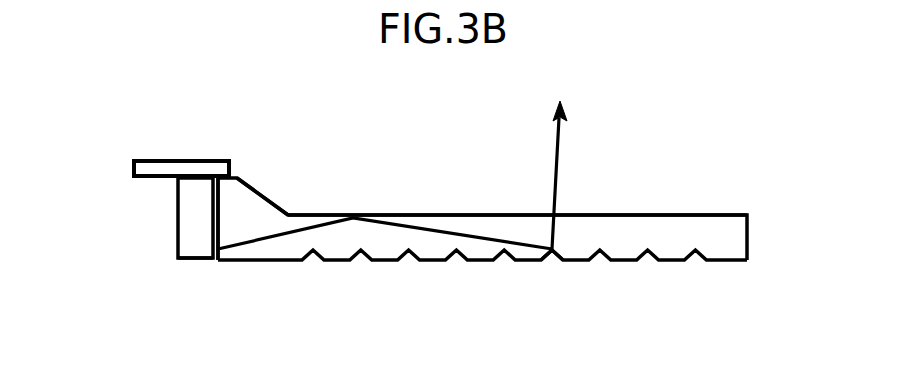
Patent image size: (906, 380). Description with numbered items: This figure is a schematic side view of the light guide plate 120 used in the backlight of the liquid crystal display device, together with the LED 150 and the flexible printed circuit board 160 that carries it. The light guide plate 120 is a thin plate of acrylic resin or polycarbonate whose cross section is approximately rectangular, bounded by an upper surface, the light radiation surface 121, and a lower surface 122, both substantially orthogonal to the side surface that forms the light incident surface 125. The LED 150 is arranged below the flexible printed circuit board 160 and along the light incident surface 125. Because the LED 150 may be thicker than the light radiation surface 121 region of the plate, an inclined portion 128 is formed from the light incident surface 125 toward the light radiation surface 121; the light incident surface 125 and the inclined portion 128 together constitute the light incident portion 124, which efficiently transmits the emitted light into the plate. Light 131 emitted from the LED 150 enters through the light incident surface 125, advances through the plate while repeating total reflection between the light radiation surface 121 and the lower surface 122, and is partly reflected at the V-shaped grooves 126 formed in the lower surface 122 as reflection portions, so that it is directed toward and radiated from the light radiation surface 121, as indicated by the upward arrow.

The light guide plate 120 is at (427, 240).
The light radiation surface 121 is at (625, 215).
The lower surface 122 is at (622, 262).
The light incident portion 124 is at (238, 258).
The light incident surface 125 is at (211, 217).
The grooves 126 is at (552, 262).
The inclined portion 128 is at (262, 211).
The light 131 is at (371, 222).
The LED 150 is at (195, 262).
The flexible printed circuit board 160 is at (187, 161).